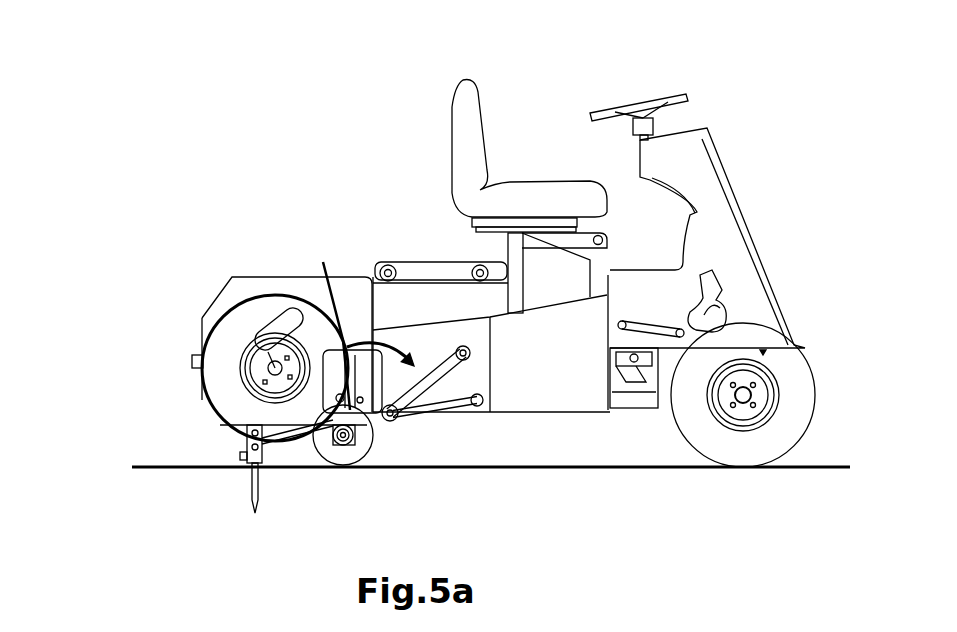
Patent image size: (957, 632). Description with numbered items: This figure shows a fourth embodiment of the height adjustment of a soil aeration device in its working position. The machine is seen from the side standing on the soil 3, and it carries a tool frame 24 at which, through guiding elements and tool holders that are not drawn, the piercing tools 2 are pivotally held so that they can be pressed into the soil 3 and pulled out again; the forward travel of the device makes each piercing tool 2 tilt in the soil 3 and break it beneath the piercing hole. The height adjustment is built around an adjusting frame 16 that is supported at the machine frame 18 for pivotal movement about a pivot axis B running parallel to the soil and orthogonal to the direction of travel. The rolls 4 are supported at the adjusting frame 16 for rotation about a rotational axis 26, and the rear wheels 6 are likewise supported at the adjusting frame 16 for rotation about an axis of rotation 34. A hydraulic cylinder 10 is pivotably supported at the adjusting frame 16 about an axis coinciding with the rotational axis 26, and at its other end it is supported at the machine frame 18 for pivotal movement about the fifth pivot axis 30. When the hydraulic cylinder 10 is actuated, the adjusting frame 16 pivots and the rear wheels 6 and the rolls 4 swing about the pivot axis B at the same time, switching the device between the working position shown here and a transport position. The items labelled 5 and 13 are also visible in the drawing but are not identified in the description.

The piercing tool 2 is at (252, 495).
The soil 3 is at (805, 467).
The rolls 4 is at (357, 453).
The rear wheel 5 is at (737, 443).
The rear wheels 6 is at (235, 377).
The hydraulic cylinder 10 is at (433, 377).
The seat 13 is at (468, 105).
The adjusting frame 16 is at (310, 440).
The machine frame 18 is at (568, 387).
The tool frame 24 is at (242, 290).
The rotational axis 26 is at (343, 447).
The fifth pivot axis 30 is at (478, 402).
The axis of rotation 34 is at (260, 362).
The pivot axis B is at (355, 347).